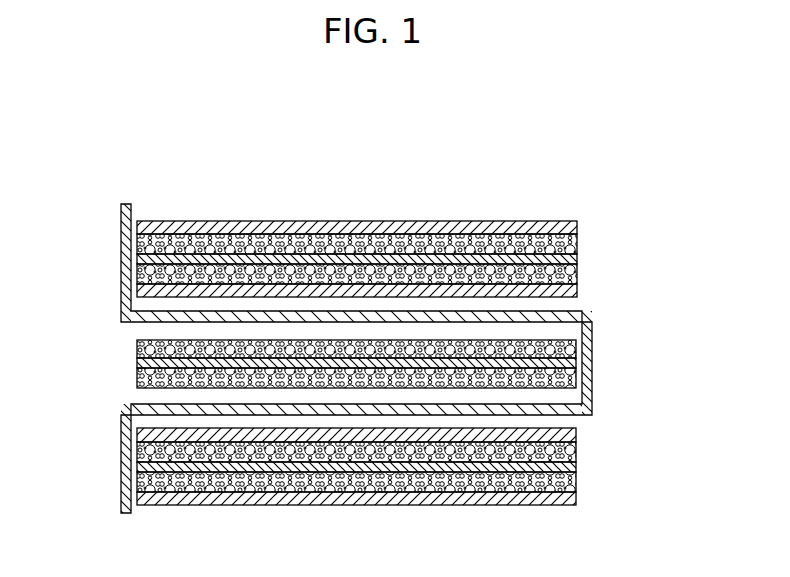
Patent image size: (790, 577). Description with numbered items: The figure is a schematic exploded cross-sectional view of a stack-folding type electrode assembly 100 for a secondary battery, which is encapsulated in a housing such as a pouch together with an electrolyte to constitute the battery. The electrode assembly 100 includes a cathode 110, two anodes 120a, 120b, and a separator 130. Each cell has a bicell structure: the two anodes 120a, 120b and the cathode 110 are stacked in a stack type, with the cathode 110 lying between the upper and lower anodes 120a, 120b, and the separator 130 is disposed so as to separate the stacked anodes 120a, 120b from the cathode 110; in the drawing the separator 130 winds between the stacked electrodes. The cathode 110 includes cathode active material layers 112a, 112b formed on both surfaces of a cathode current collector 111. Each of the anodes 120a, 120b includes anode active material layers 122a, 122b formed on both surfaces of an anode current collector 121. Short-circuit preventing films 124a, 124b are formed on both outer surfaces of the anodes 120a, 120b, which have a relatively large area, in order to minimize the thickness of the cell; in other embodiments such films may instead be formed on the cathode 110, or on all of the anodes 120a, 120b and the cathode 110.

The electrode assembly 100 is at (642, 160).
The cathode 110 is at (582, 347).
The cathode current collector 111 is at (137, 363).
The cathode active material layer 112a is at (137, 343).
The cathode active material layer 112b is at (137, 377).
The anode 120a is at (419, 209).
The anode 120b is at (597, 475).
The anode current collector 121 is at (577, 258).
The anode active material layer 122a is at (577, 238).
The anode active material layer 122b is at (577, 272).
The short-circuit preventing film 124a is at (568, 222).
The short-circuit preventing film 124b is at (577, 292).
The separator 130 is at (590, 390).